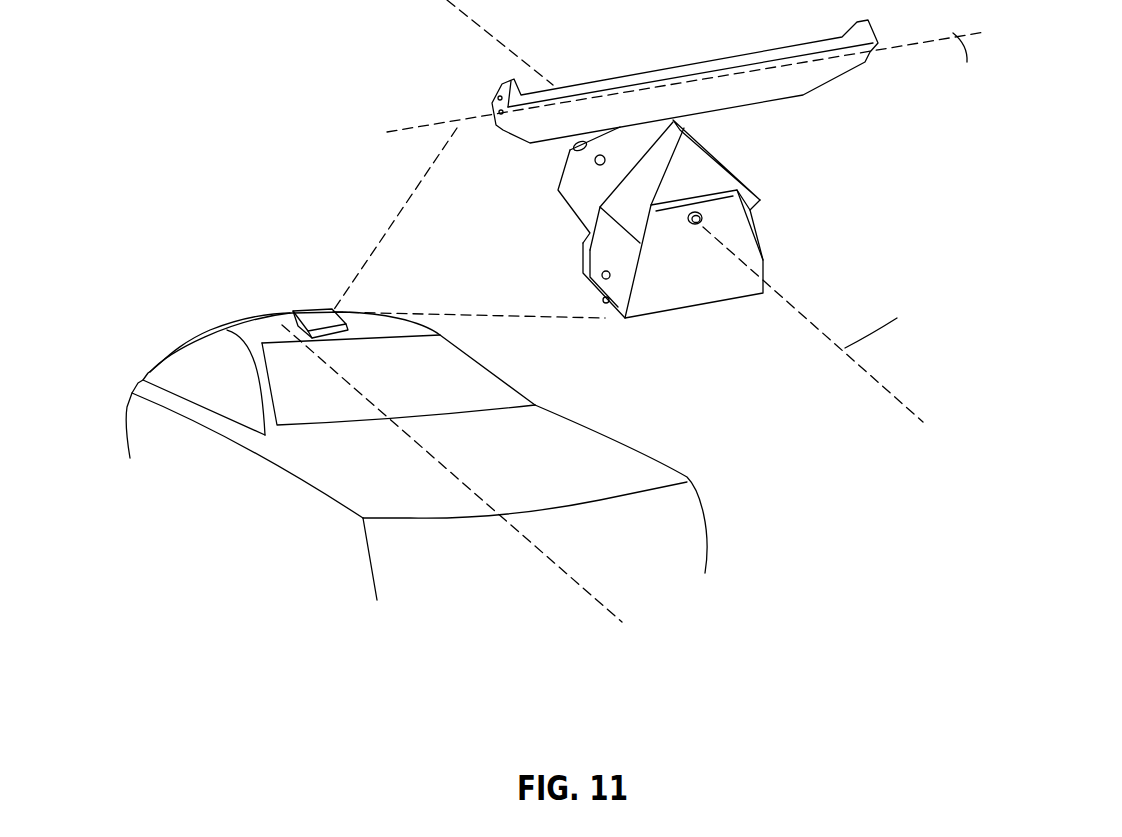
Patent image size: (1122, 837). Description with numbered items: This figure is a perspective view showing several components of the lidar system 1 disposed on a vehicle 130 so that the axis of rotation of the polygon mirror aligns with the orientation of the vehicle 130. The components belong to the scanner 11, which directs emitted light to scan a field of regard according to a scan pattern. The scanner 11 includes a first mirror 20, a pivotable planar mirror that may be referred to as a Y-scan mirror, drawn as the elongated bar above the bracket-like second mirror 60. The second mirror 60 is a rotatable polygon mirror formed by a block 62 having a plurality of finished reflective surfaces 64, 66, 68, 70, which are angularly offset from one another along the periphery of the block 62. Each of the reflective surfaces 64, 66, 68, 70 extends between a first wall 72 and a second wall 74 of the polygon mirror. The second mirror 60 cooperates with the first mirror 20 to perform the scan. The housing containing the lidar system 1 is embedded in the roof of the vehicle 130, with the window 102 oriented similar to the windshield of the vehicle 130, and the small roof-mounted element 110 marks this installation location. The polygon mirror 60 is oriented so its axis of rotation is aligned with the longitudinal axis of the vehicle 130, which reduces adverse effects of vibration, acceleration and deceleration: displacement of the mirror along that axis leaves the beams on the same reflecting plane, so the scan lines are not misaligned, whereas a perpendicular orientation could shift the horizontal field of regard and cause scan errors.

The lidar system 1 is at (277, 270).
The scanner 11 is at (813, 162).
The first mirror 20 is at (855, 68).
The second mirror 60 is at (780, 258).
The block 62 is at (760, 200).
The reflective surface 64 is at (727, 162).
The reflective surface 66 is at (633, 225).
The reflective surface 68 is at (627, 195).
The reflective surface 70 is at (753, 210).
The first wall 72 is at (693, 165).
The second wall 74 is at (650, 130).
The window 102 is at (293, 312).
The roof mount 110 is at (323, 315).
The vehicle 130 is at (127, 425).